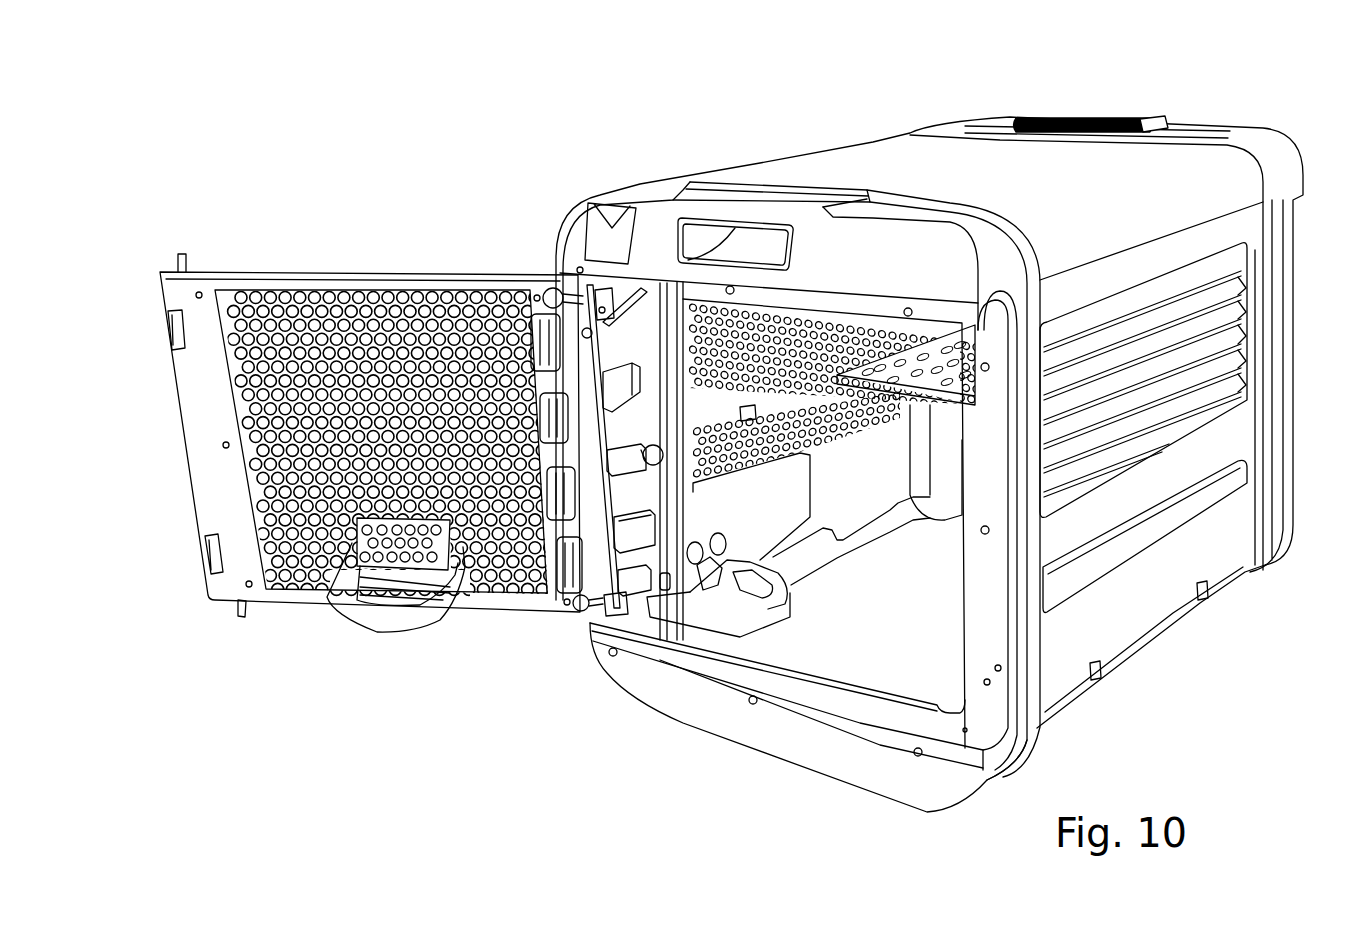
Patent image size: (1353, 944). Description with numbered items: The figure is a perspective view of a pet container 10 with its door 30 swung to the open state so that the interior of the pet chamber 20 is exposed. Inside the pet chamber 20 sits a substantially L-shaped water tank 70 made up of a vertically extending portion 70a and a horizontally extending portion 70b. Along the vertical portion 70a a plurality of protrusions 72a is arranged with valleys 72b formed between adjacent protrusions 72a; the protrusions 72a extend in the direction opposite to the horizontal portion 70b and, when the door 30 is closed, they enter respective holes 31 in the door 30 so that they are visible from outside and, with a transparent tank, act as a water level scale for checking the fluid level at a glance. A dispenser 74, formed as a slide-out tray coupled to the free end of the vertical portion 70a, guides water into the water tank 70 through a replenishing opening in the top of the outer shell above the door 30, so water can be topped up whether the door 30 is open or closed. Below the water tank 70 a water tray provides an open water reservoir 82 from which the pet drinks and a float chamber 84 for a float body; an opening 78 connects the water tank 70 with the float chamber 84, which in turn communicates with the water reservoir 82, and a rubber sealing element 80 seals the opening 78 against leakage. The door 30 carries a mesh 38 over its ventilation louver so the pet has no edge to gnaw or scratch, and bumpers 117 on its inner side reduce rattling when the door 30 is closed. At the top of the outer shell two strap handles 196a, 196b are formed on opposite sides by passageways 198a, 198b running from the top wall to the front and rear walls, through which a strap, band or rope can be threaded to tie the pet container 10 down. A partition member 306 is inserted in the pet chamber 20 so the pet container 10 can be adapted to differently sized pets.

The pet container 10 is at (462, 117).
The pet chamber 20 is at (840, 643).
The door 30 is at (395, 262).
The holes 31 is at (545, 292).
The mesh 38 is at (270, 590).
The bumpers 117 is at (166, 330).
The water tank 70 is at (633, 542).
The vertically extending portion 70a is at (655, 640).
The horizontally extending portion 70b is at (682, 630).
The protrusions 72a is at (583, 250).
The valleys 72b is at (598, 605).
The dispenser 74 is at (613, 223).
The opening 78 is at (655, 592).
The sealing element 80 is at (693, 561).
The water reservoir 82 is at (768, 610).
The float chamber 84 is at (700, 727).
The strap handle 196a is at (692, 196).
The strap handle 196b is at (1163, 122).
The passageway 198a is at (716, 238).
The passageway 198b is at (1073, 111).
The partition member 306 is at (853, 305).